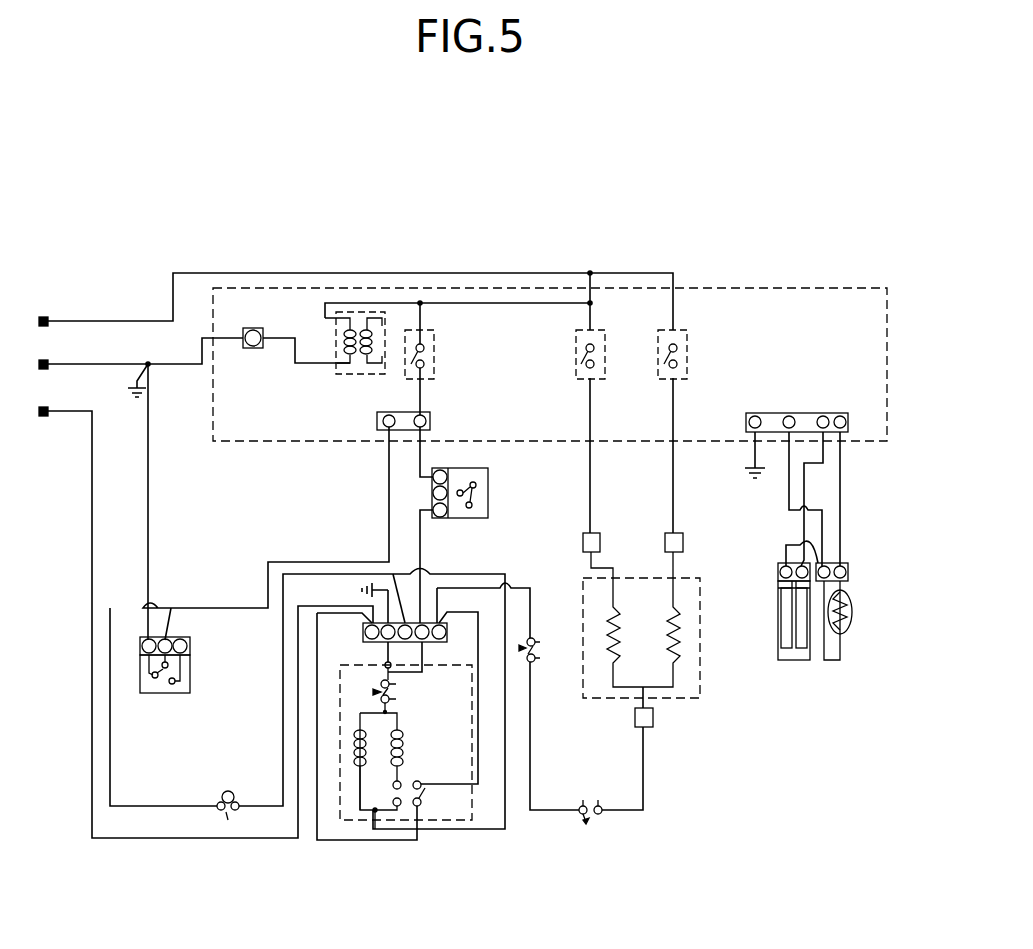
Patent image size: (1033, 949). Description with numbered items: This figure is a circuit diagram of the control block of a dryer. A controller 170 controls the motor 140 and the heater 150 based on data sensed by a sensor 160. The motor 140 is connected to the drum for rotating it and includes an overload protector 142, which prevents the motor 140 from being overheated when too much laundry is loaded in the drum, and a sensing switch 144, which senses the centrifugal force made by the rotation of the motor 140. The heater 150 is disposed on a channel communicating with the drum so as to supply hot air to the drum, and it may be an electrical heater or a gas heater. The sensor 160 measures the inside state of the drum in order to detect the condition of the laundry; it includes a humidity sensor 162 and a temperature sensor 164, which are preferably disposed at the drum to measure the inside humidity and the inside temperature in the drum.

The motor 140 is at (355, 820).
The overload protector 142 is at (378, 691).
The sensing switch 144 is at (401, 748).
The heater 150 is at (700, 692).
The sensor 160 is at (860, 563).
The humidity sensor 162 is at (800, 615).
The temperature sensor 164 is at (852, 612).
The controller 170 is at (793, 287).